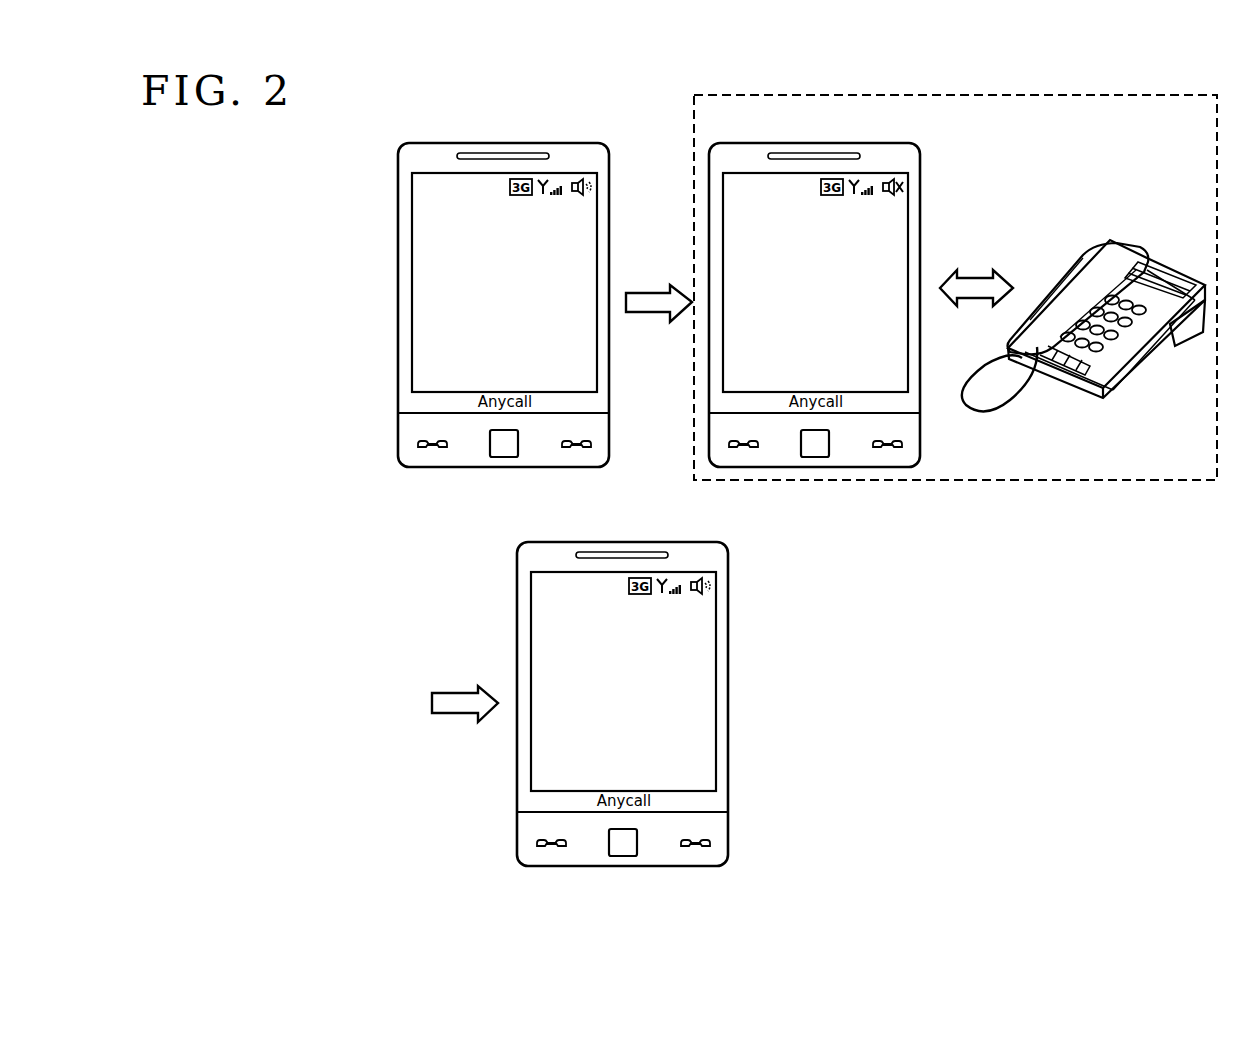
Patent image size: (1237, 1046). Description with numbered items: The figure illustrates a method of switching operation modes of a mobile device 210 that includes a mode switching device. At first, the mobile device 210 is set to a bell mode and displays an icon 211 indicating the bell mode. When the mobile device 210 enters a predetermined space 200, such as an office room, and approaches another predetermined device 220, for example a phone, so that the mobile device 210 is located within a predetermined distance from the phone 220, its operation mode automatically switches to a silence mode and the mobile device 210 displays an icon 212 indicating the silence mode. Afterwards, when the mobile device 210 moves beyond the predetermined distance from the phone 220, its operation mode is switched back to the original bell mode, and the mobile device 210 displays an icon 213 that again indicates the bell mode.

The predetermined space 200 is at (975, 95).
The mobile device 210 is at (562, 146).
The icon indicating the bell mode 211 is at (598, 186).
The icon indicating the silence mode 212 is at (897, 188).
The icon indicating the bell mode 213 is at (692, 575).
The predetermined device 220 is at (1105, 236).